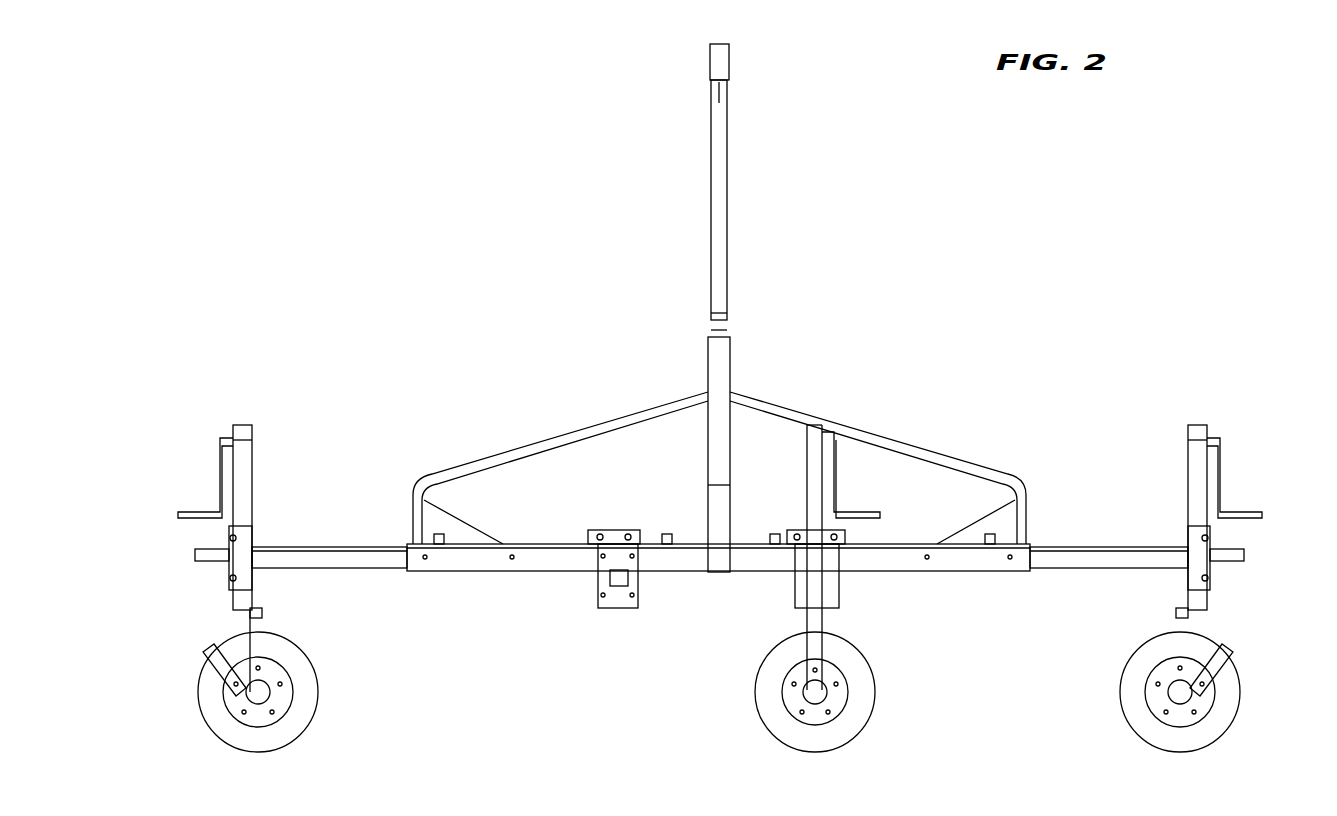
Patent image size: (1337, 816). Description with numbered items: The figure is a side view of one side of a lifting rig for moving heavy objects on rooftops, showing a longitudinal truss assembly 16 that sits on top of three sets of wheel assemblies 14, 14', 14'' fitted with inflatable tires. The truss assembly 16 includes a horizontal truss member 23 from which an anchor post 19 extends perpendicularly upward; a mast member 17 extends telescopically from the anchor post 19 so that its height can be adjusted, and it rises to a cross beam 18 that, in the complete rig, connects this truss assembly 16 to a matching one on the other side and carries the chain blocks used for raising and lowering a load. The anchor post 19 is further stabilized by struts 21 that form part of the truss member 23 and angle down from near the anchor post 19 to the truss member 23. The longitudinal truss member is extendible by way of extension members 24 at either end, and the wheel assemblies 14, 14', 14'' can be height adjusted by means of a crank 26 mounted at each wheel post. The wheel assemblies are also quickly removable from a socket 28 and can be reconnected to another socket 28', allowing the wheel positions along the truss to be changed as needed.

The wheel assembly 14 is at (190, 680).
The wheel assembly 14' is at (864, 588).
The wheel assembly 14'' is at (1132, 680).
The truss assembly 16 is at (520, 630).
The mast member 17 is at (716, 196).
The cross beam 18 is at (718, 62).
The anchor post 19 is at (716, 452).
The struts 21 is at (795, 416).
The truss member 23 is at (685, 560).
The extension members 24 is at (318, 556).
The crank 26 is at (220, 484).
The socket 28 is at (254, 536).
The socket 28' is at (601, 540).